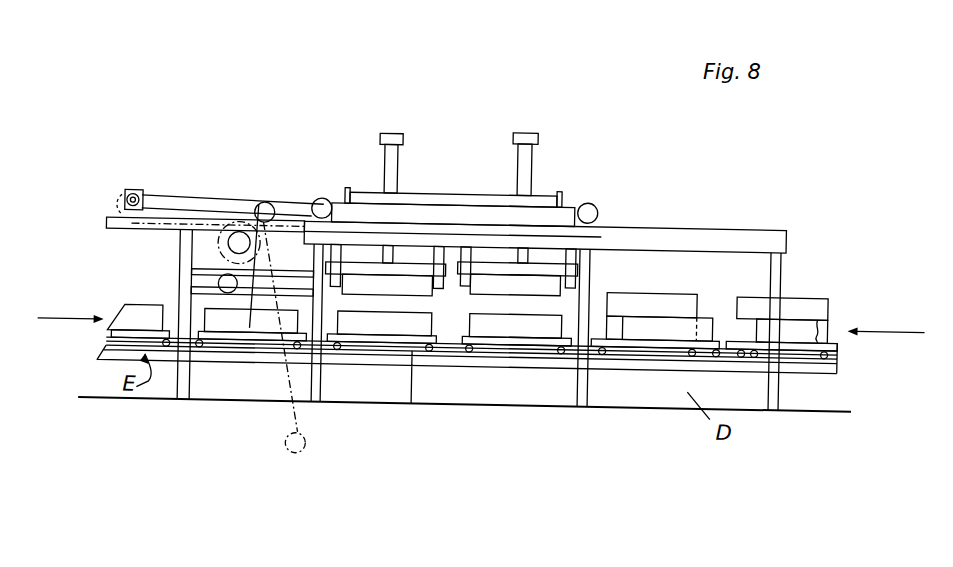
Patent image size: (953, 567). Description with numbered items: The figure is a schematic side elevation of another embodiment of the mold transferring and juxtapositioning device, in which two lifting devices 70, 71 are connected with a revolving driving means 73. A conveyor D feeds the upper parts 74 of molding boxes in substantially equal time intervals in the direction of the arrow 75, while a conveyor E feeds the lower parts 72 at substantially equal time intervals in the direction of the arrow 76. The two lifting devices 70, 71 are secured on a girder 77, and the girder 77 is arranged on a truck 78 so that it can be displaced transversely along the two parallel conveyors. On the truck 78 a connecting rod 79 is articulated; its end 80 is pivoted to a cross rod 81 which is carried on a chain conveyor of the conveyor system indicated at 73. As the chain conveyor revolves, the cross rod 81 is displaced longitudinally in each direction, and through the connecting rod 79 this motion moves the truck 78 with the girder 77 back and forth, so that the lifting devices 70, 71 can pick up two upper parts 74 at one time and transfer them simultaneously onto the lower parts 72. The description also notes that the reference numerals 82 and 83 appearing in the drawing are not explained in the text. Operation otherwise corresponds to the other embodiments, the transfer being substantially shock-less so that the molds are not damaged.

The lifting device 70 is at (394, 151).
The lifting device 71 is at (527, 149).
The lower part 72 is at (153, 321).
The revolving driving means 73 is at (117, 210).
The upper part 74 is at (635, 318).
The arrow 75 is at (886, 321).
The arrow 76 is at (71, 307).
The girder 77 is at (536, 192).
The truck 78 is at (446, 206).
The connecting rod 79 is at (236, 204).
The end 80 is at (136, 189).
The cross rod 81 is at (130, 190).
The frame beam 82 is at (712, 218).
The support roller 83 is at (229, 270).